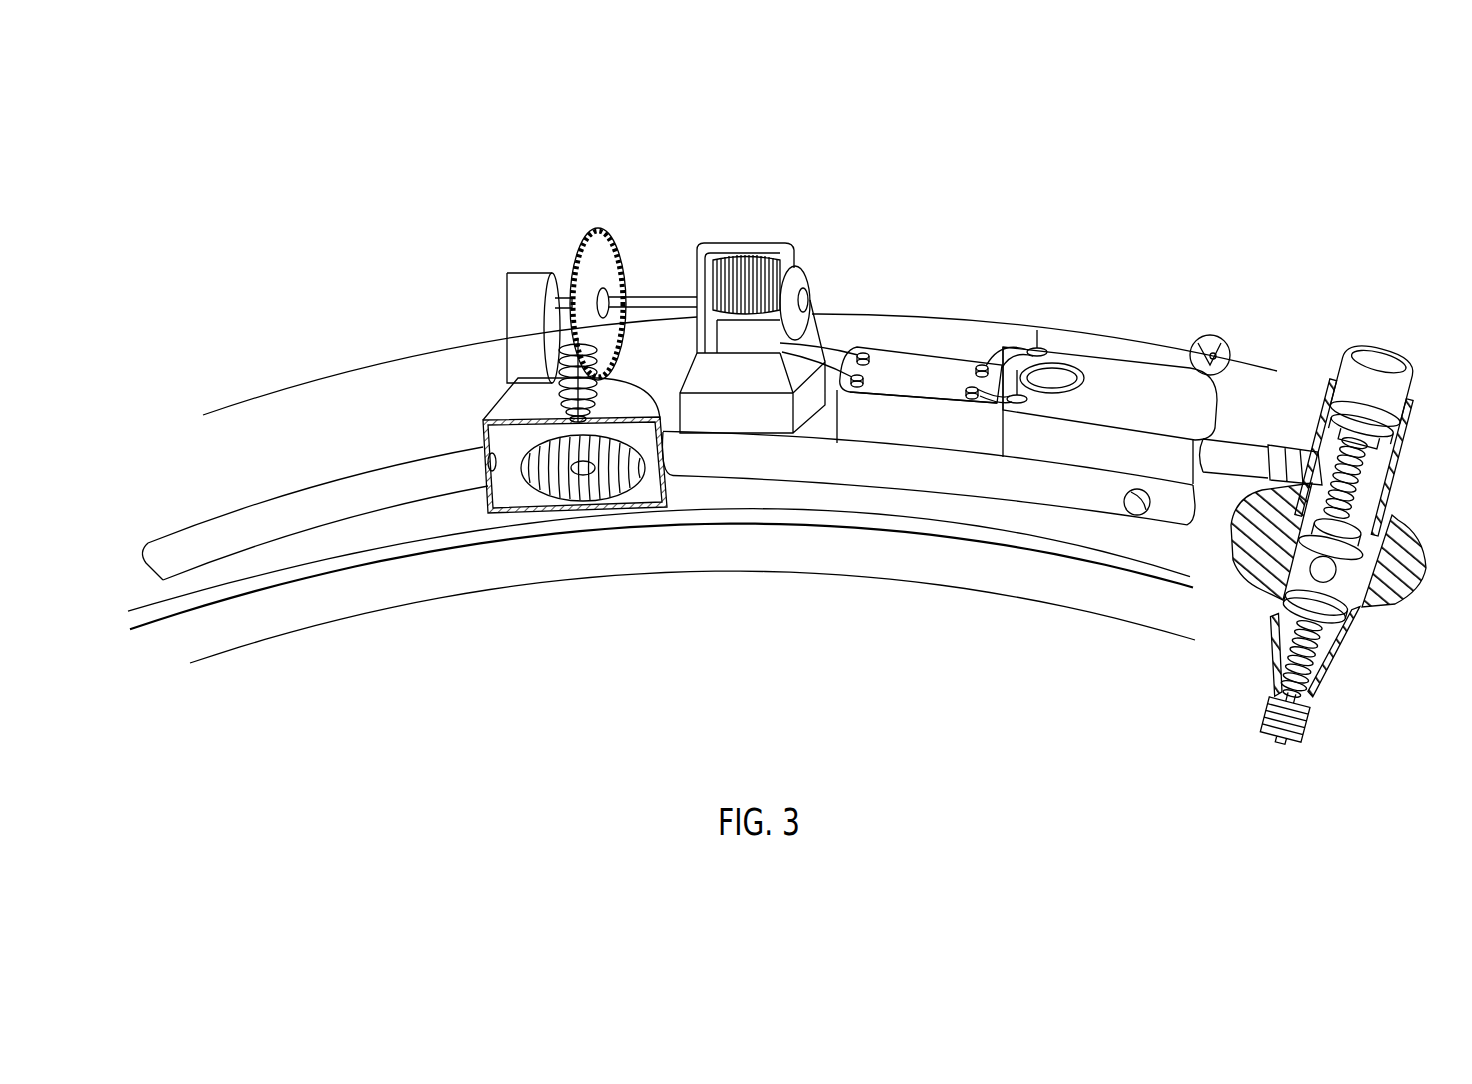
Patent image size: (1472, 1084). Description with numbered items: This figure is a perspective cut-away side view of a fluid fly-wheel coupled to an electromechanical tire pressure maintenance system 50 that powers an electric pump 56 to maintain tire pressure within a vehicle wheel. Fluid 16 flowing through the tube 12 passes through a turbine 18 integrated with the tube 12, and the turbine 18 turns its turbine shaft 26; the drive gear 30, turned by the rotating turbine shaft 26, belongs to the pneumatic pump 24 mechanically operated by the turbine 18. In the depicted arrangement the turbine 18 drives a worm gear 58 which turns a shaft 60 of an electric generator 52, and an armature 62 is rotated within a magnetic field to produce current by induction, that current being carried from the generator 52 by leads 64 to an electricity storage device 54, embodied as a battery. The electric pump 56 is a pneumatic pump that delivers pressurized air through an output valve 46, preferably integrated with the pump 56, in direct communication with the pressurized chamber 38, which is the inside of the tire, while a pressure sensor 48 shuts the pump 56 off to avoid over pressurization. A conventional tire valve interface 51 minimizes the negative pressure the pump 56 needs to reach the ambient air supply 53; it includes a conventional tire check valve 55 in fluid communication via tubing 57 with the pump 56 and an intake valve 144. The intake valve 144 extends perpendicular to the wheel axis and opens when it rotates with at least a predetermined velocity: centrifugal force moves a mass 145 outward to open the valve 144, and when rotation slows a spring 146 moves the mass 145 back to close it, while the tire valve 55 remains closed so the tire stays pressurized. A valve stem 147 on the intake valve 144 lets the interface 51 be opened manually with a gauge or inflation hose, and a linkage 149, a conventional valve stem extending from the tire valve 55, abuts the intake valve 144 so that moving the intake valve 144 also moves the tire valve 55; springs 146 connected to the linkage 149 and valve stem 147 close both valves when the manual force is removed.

The tube 12 is at (306, 502).
The fluid 16 is at (484, 466).
The turbine 18 is at (573, 530).
The pneumatic pump 24 is at (941, 409).
The electric pump 56 is at (1147, 350).
The turbine shaft 26 is at (570, 347).
The drive gear 30 is at (578, 245).
The pressurized chamber 38 is at (1327, 541).
The output valve 46 is at (1232, 335).
The pressure sensor 48 is at (1058, 372).
The tire pressure maintenance system 50 is at (925, 237).
The tire valve interface 51 is at (1216, 558).
The electric generator 52 is at (717, 243).
The ambient air supply 53 is at (1327, 541).
The electricity storage device 54 is at (921, 375).
The tire check valve 55 is at (1408, 378).
The tubing 57 is at (1400, 450).
The worm gear 58 is at (605, 380).
The shaft 60 is at (658, 297).
The armature 62 is at (760, 262).
The leads 64 is at (1008, 348).
The intake valve 144 is at (1356, 662).
The mass 145 is at (1390, 606).
The spring 146 is at (1352, 482).
The valve stem 147 is at (1290, 682).
The linkage 149 is at (1368, 472).